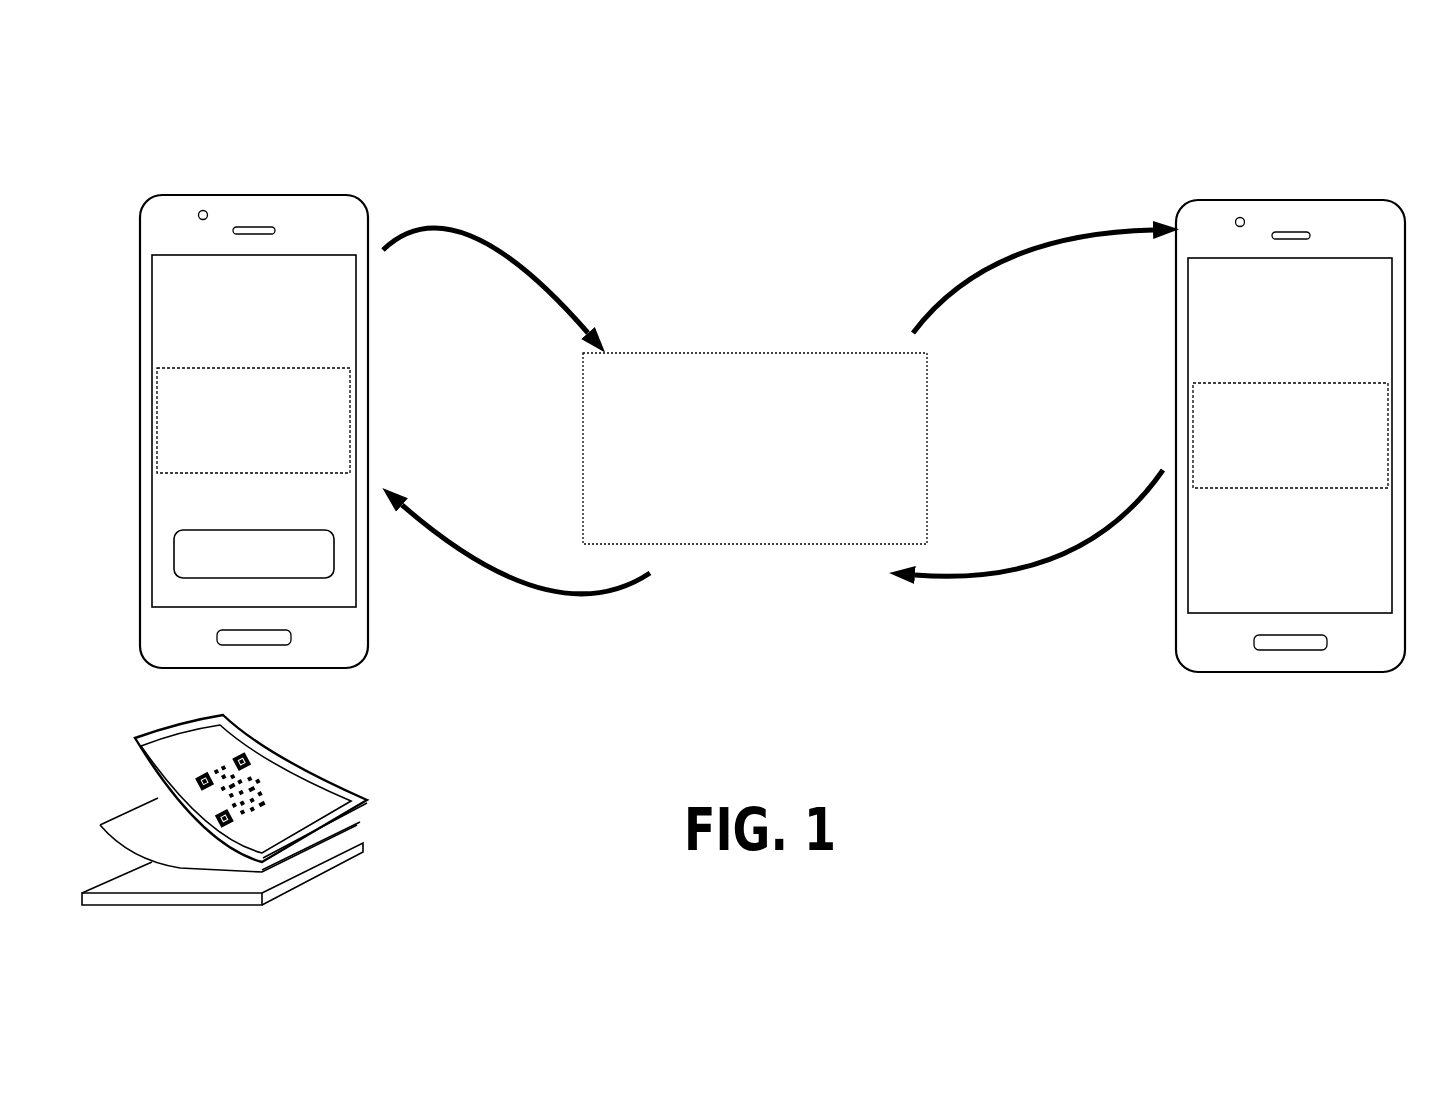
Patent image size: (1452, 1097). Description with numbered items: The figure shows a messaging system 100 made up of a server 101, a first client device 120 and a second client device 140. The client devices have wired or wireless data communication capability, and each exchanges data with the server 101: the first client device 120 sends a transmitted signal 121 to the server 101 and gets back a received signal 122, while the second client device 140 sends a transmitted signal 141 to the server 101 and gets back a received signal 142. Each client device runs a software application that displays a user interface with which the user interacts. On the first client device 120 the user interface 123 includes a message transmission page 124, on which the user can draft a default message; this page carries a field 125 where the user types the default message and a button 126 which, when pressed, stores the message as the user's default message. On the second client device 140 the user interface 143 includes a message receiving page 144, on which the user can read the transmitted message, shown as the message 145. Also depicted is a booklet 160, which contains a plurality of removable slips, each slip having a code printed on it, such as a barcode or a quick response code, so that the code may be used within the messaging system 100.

The messaging system 100 is at (764, 464).
The server 101 is at (755, 448).
The first client device 120 is at (292, 175).
The transmitted signal 121 is at (530, 264).
The received signal 122 is at (526, 567).
The user interface 123 is at (350, 277).
The message transmission page 124 is at (255, 309).
The field 125 is at (320, 453).
The button 126 is at (332, 590).
The second client device 140 is at (1308, 163).
The transmitted signal 141 is at (1032, 544).
The received signal 142 is at (1018, 264).
The user interface 143 is at (1200, 278).
The message receiving page 144 is at (1291, 318).
The message 145 is at (1200, 417).
The booklet 160 is at (378, 816).